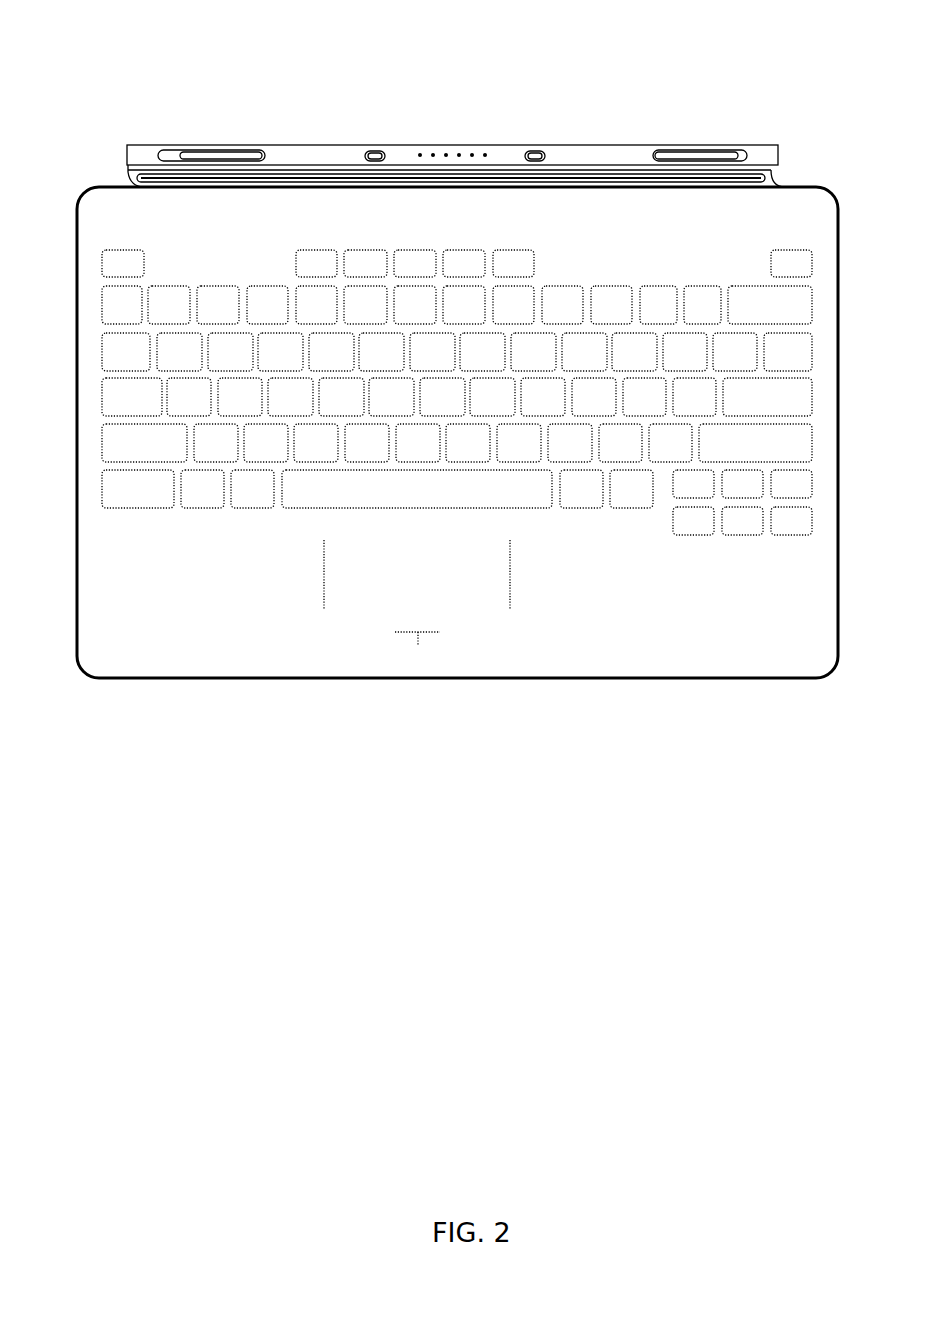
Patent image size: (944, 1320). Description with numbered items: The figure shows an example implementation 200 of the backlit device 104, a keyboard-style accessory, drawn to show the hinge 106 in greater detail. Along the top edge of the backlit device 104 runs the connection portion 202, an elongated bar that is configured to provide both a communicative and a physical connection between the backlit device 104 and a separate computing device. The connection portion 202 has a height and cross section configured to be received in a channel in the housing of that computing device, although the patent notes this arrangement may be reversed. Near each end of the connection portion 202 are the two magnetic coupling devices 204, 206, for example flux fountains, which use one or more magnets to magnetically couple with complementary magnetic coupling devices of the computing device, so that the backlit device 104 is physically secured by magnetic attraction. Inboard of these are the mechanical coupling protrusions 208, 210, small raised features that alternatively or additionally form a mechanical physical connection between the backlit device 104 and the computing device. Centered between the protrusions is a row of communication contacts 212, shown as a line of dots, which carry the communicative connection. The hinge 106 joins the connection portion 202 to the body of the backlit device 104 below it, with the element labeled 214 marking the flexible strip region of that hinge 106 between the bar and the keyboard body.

The backlit device 104 is at (142, 660).
The hinge 106 is at (791, 164).
The example implementation 200 is at (142, 66).
The connection portion 202 is at (141, 145).
The magnetic coupling device 204 is at (210, 156).
The magnetic coupling device 206 is at (695, 156).
The mechanical coupling protrusion 208 is at (375, 154).
The mechanical coupling protrusion 210 is at (536, 154).
The communication contacts 212 is at (457, 119).
The flexible hinge 214 is at (597, 180).